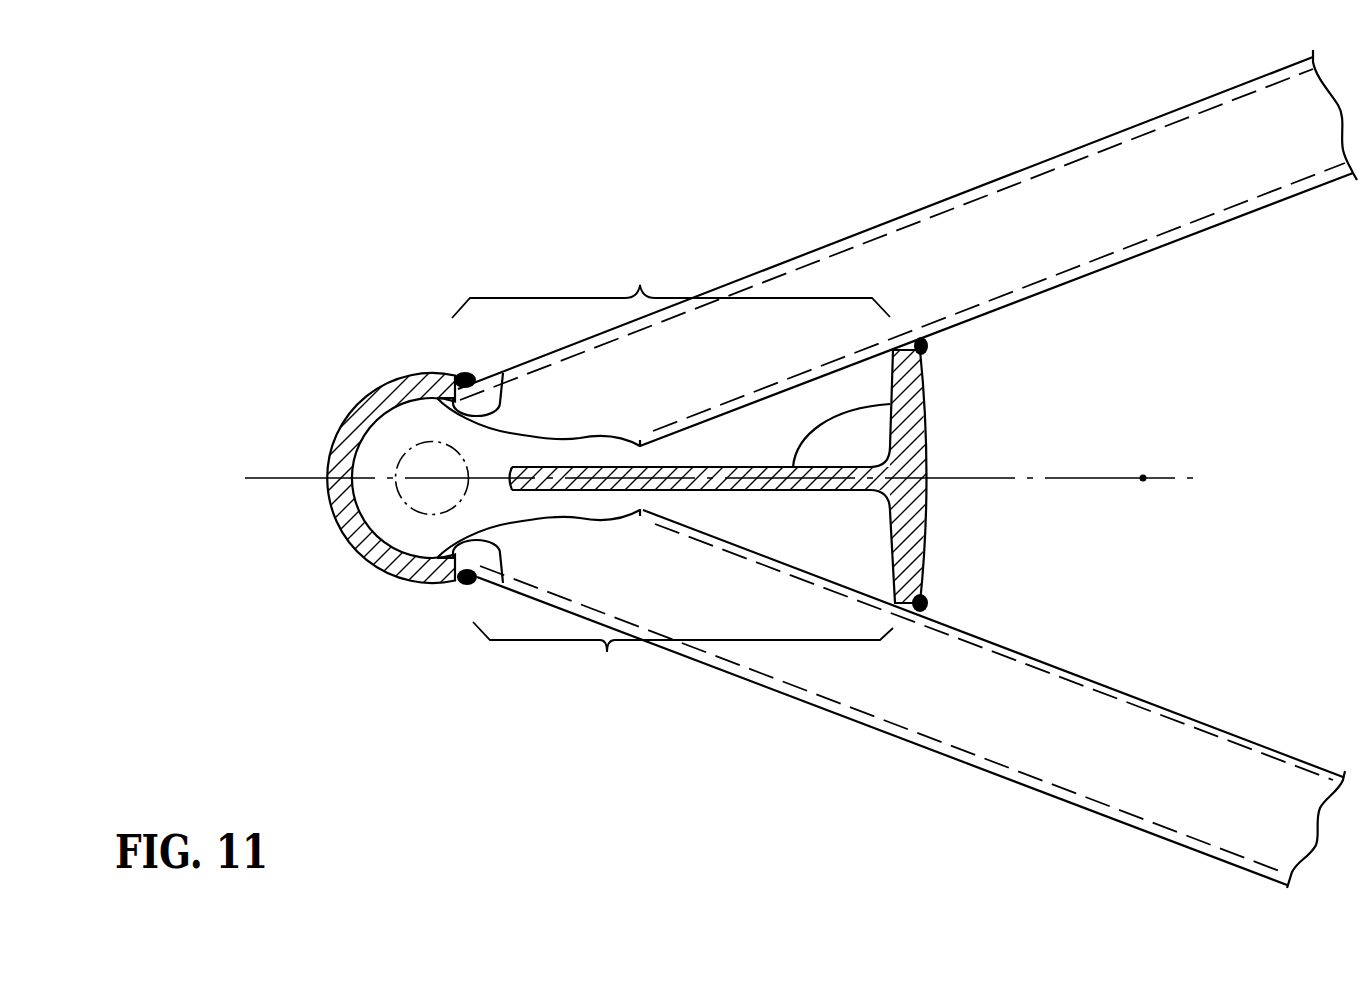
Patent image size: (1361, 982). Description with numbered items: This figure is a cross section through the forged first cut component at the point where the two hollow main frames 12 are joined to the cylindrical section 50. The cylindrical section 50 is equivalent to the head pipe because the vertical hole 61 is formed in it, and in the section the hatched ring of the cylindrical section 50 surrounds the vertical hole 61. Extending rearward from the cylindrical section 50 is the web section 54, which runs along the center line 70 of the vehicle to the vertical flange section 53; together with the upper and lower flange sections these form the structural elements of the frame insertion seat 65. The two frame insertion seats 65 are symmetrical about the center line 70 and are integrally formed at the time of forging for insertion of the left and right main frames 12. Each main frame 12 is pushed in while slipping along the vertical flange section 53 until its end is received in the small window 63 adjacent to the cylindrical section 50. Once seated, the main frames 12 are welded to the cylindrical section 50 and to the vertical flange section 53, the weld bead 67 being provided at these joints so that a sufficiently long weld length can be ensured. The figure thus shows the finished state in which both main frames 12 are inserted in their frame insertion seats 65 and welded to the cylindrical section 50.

The main frame 12 is at (855, 237).
The cylindrical section 50 is at (348, 552).
The vertical flange section 53 is at (922, 548).
The web section 54 is at (905, 405).
The vertical hole 61 is at (383, 398).
The small window 63 is at (500, 375).
The frame insertion seat 65 is at (640, 285).
The weld bead 67 is at (927, 601).
The center line 70 is at (1143, 478).